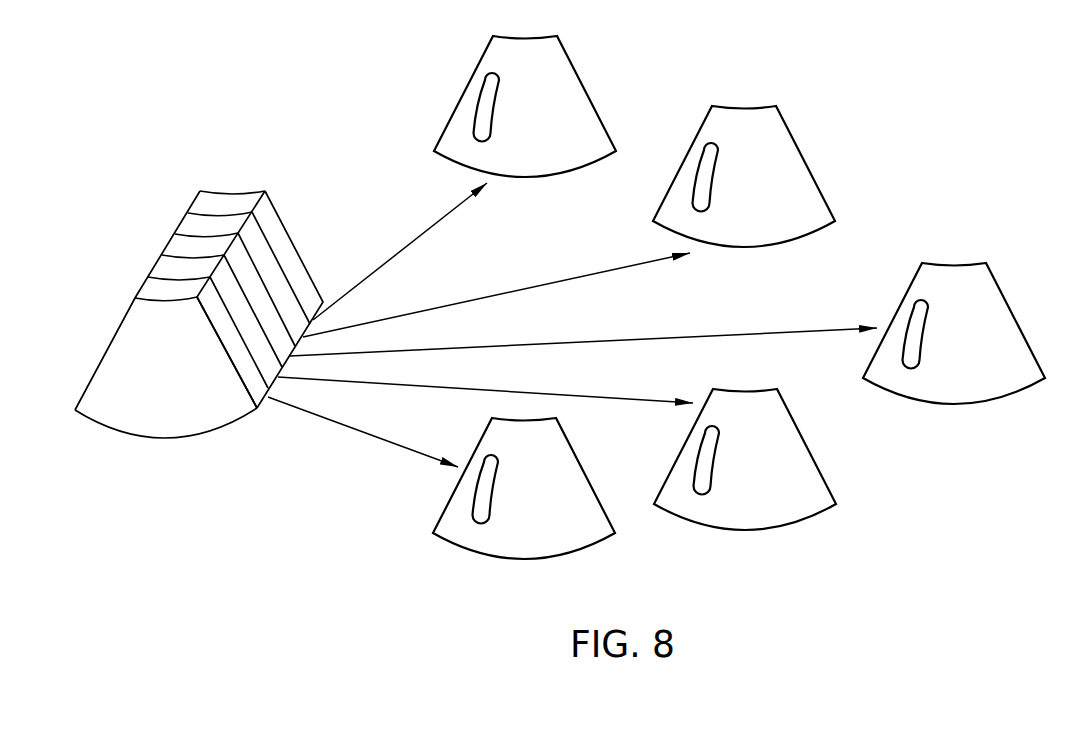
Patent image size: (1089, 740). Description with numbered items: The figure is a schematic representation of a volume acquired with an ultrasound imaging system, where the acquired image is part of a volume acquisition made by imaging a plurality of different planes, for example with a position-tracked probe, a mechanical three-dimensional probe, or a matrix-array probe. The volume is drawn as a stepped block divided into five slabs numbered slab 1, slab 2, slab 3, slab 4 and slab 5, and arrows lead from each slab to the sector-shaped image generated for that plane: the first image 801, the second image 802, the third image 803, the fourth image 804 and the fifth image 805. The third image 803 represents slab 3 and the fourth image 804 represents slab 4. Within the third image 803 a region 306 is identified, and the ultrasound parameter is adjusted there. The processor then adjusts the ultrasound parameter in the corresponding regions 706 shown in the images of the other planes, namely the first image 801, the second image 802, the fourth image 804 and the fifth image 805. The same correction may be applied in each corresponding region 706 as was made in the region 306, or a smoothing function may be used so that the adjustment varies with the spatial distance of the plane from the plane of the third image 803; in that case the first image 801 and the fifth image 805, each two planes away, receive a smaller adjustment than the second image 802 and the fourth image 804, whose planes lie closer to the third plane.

The first image 801 is at (453, 520).
The second image 802 is at (813, 482).
The third image 803 is at (983, 282).
The fourth image 804 is at (773, 127).
The fifth image 805 is at (553, 57).
The corresponding region 706 is at (500, 110).
The region 306 is at (927, 335).
The slab 1 is at (228, 352).
The slab 2 is at (242, 332).
The slab 3 is at (255, 311).
The slab 4 is at (269, 289).
The slab 5 is at (283, 268).